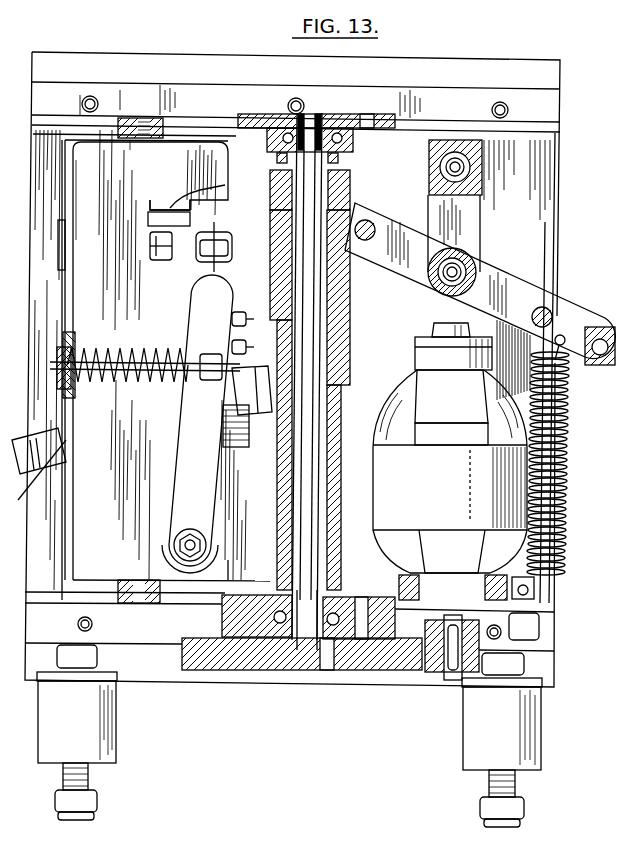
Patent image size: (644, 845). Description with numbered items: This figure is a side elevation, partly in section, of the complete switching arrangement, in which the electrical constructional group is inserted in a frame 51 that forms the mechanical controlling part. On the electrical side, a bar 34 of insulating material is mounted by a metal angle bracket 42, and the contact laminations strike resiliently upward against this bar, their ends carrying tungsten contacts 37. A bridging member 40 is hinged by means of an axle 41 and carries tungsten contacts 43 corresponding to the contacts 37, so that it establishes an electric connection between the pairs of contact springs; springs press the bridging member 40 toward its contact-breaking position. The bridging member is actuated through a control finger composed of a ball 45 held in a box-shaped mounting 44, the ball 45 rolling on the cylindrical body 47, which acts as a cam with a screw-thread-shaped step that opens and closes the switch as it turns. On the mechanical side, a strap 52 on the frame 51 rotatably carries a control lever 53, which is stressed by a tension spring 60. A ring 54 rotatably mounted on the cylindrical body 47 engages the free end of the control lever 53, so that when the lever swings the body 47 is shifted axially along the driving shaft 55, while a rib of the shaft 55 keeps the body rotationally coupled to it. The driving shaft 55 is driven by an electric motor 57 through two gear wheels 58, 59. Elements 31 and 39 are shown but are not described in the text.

The cover plate 31 is at (190, 165).
The bar 34 is at (172, 208).
The tungsten contacts 37 is at (172, 250).
The compression spring 39 is at (118, 380).
The bridging member 40 is at (203, 495).
The axle 41 is at (185, 545).
The metal angle bracket 42 is at (172, 212).
The tungsten contacts 43 is at (200, 228).
The box-shaped mounting 44 is at (242, 450).
The ball 45 is at (268, 418).
The cylindrical body 47 is at (337, 325).
The frame 51 is at (445, 113).
The strap 52 is at (470, 243).
The control lever 53 is at (577, 323).
The ring 54 is at (345, 197).
The driving shaft 55 is at (300, 502).
The electric motor 57 is at (512, 497).
The gear wheel 58 is at (384, 668).
The gear wheel 59 is at (437, 668).
The tension spring 60 is at (544, 546).